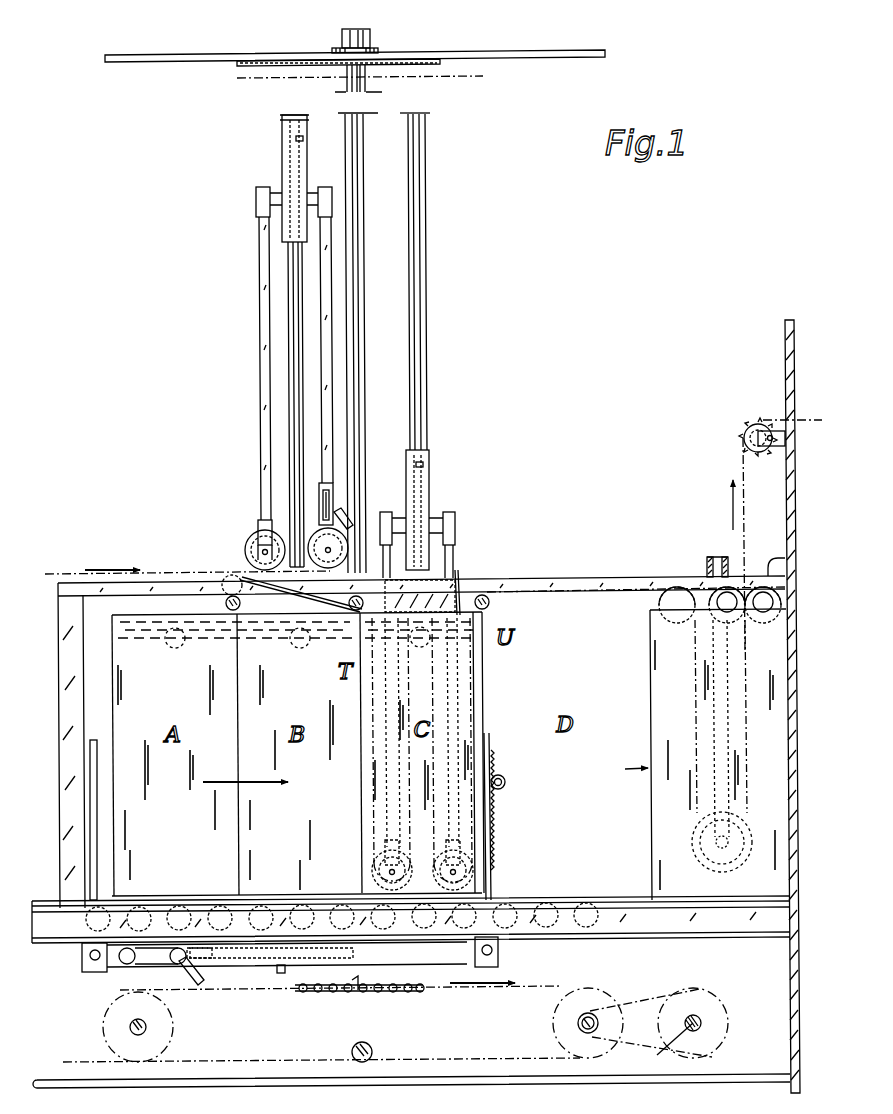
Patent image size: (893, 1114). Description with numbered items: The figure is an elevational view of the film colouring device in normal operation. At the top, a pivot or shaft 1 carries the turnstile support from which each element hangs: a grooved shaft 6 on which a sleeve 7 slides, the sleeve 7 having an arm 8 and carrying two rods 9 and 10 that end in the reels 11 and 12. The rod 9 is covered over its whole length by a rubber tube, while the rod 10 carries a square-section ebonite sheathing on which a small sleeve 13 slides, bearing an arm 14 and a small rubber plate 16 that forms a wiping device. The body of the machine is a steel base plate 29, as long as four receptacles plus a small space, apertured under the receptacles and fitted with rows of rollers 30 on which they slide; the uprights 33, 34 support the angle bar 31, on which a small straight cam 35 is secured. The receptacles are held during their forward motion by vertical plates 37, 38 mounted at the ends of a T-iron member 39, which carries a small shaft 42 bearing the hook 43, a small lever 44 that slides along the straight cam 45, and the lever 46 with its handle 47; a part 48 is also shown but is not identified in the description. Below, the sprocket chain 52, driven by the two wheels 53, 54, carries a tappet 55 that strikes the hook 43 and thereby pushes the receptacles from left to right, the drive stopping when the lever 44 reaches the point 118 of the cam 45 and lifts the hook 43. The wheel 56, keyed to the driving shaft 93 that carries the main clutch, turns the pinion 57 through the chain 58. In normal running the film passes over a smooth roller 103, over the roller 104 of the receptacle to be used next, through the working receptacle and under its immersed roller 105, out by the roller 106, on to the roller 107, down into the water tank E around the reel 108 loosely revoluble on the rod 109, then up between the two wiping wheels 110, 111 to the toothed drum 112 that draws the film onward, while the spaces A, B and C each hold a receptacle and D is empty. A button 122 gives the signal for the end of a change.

The pivot or shaft 1 is at (357, 272).
The grooved shaft 6 is at (297, 310).
The sleeve 7 is at (299, 182).
The arm 8 is at (296, 139).
The rod 9 is at (265, 398).
The rod 10 is at (327, 434).
The reel 11 is at (246, 551).
The reel 12 is at (314, 531).
The small sleeve 13 is at (336, 500).
The arm 14 is at (330, 500).
The small rubber plate 16 is at (346, 521).
The base plate 29 is at (573, 905).
The rollers 30 is at (522, 906).
The angle bar 31 is at (565, 585).
The upright 33 is at (71, 660).
The upright 34 is at (787, 503).
The small straight cam 35 is at (371, 598).
The vertical plate 37 is at (93, 845).
The vertical plate 38 is at (489, 746).
The T-iron member 39 is at (457, 951).
The small shaft 42 is at (178, 963).
The hook 43 is at (202, 981).
The small lever 44 is at (202, 948).
The straight cam 45 is at (247, 946).
The lever 46 is at (146, 948).
The handle 47 is at (124, 961).
The lug 48 is at (286, 969).
The sprocket chain 52 is at (512, 991).
The wheel 53 is at (104, 1034).
The wheel 54 is at (613, 996).
The tappet 55 is at (355, 993).
The wheel 56 is at (723, 1006).
The pinion 57 is at (590, 1015).
The chain 58 is at (661, 991).
The driving shaft 93 is at (672, 1047).
The smooth roller 103 is at (235, 578).
The roller 104 is at (370, 619).
The immersed roller 105 is at (431, 639).
The smooth roller 106 is at (490, 605).
The roller 107 is at (666, 601).
The reel 108 is at (738, 848).
The rod 109 is at (726, 753).
The wiping wheel 110 is at (722, 616).
The wiping wheel 111 is at (758, 616).
The toothed drum 112 is at (757, 425).
The point of cam 118 is at (355, 953).
The button 122 is at (496, 762).